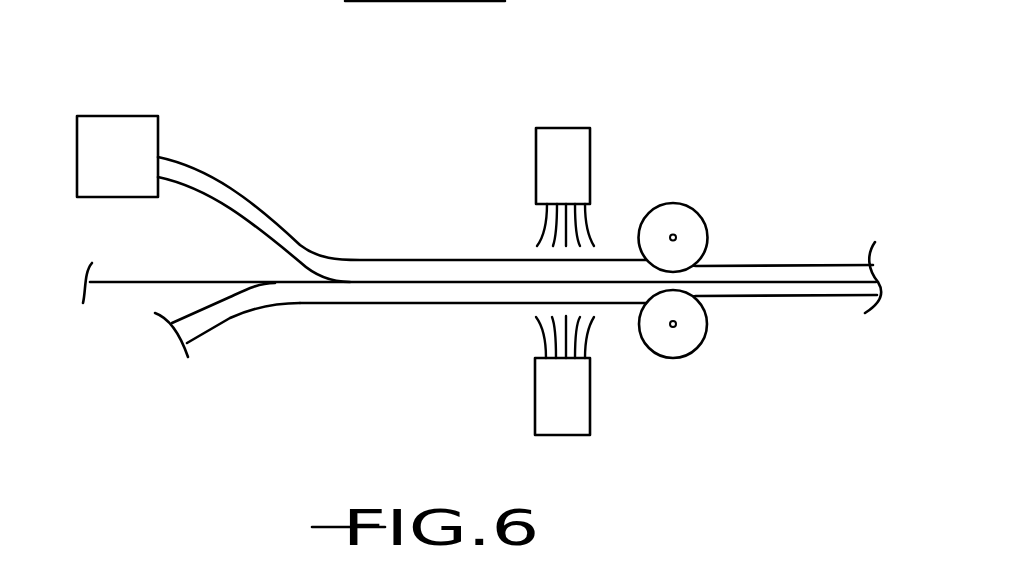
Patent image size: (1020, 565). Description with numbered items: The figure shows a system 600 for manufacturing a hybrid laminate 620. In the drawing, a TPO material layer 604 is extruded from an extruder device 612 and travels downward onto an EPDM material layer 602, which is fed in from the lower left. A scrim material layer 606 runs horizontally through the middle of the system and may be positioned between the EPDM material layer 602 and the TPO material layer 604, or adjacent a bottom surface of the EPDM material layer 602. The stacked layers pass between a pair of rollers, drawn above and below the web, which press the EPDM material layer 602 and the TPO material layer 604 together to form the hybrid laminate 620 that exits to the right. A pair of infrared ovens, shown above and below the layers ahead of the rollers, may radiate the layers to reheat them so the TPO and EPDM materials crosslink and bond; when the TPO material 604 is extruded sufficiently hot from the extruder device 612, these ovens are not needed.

The system 600 is at (733, 131).
The EPDM material layer 602 is at (293, 293).
The TPO material layer 604 is at (207, 185).
The scrim material layer 606 is at (148, 280).
The extruder device 612 is at (122, 152).
The hybrid laminate 620 is at (801, 289).